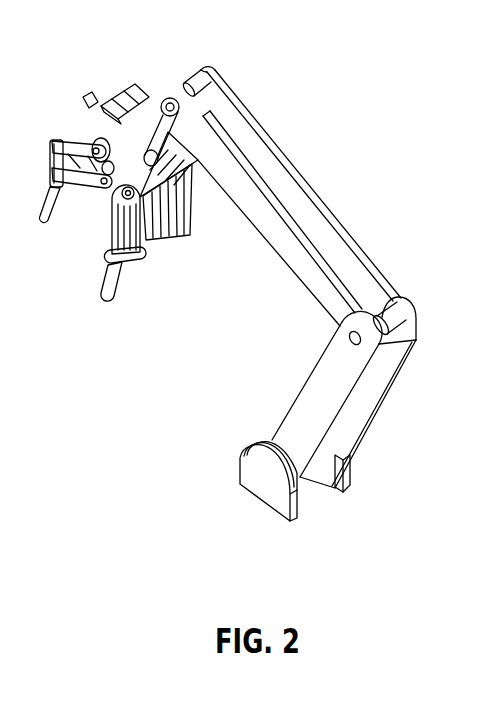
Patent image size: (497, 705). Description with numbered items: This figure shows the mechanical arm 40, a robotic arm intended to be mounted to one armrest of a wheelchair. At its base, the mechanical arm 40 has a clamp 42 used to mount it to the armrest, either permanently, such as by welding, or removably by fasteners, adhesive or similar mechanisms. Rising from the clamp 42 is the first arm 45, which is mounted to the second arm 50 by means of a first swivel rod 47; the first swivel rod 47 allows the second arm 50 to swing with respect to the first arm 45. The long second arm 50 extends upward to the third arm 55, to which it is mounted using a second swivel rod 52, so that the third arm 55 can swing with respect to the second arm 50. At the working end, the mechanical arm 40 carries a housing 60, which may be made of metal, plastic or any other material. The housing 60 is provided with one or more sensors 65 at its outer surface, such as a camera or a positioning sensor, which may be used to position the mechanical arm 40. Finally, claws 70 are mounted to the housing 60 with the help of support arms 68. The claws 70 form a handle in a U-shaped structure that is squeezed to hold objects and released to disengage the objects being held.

The mechanical arm 40 is at (384, 141).
The clamp 42 is at (252, 467).
The first arm 45 is at (318, 393).
The first swivel rod 47 is at (383, 320).
The second arm 50 is at (272, 232).
The second swivel rod 52 is at (209, 72).
The third arm 55 is at (186, 180).
The housing 60 is at (128, 88).
The sensors 65 is at (86, 100).
The support arms 68 is at (62, 140).
The claws 70 is at (72, 196).